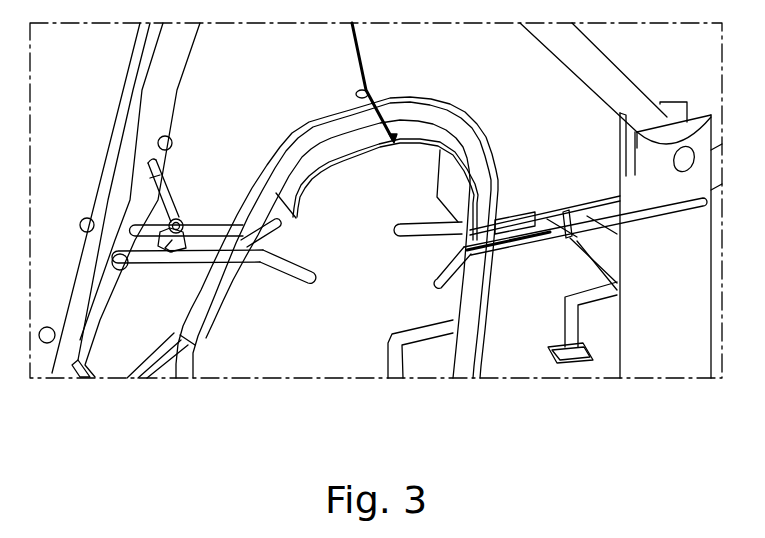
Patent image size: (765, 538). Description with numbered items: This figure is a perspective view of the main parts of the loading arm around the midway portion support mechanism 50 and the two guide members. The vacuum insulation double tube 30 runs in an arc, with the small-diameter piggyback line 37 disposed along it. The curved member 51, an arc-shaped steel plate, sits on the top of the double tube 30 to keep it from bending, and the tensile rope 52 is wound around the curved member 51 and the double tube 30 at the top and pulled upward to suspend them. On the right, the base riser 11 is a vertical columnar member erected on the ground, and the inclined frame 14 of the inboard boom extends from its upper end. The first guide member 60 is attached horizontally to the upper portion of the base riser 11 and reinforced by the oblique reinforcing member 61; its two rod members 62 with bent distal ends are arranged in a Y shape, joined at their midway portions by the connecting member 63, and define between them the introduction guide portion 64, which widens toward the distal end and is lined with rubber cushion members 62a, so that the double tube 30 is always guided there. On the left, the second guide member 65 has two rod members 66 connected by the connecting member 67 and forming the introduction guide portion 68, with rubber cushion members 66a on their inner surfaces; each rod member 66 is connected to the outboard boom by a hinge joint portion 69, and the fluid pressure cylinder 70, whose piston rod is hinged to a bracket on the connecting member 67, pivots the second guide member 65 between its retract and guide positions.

The base riser 11 is at (637, 337).
The inclined frame 14 is at (622, 70).
The vacuum insulation double tube 30 is at (299, 168).
The piggyback line 37 is at (487, 147).
The midway portion support mechanism 50 is at (398, 155).
The curved member 51 is at (318, 140).
The tensile rope 52 is at (367, 64).
The first guide member 60 is at (506, 270).
The oblique reinforcing member 61 is at (592, 256).
The rod members 62 is at (590, 197).
The rubber cushion members 62a is at (422, 240).
The connecting member 63 is at (568, 210).
The introduction guide portion 64 is at (518, 235).
The second guide member 65 is at (153, 274).
The rod members 66 is at (212, 235).
The rubber cushion members 66a is at (278, 232).
The connecting member 67 is at (177, 250).
The introduction guide portion 68 is at (262, 252).
The hinge joint portion 69 is at (120, 271).
The fluid pressure cylinder 70 is at (160, 167).